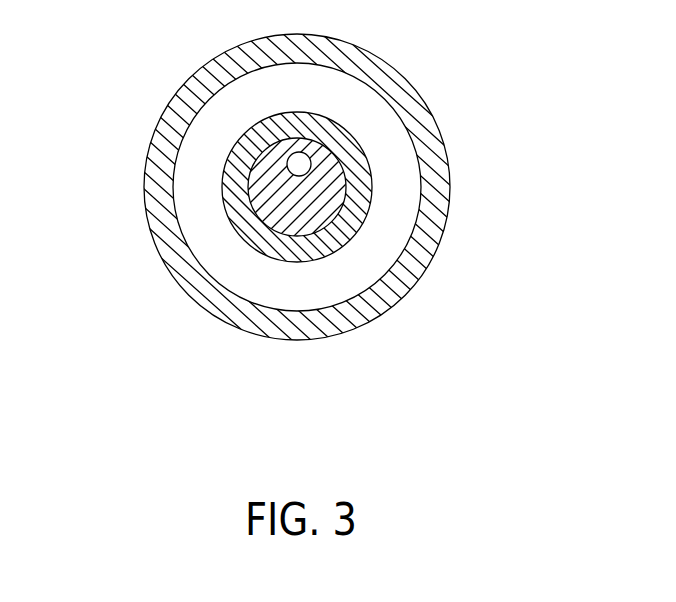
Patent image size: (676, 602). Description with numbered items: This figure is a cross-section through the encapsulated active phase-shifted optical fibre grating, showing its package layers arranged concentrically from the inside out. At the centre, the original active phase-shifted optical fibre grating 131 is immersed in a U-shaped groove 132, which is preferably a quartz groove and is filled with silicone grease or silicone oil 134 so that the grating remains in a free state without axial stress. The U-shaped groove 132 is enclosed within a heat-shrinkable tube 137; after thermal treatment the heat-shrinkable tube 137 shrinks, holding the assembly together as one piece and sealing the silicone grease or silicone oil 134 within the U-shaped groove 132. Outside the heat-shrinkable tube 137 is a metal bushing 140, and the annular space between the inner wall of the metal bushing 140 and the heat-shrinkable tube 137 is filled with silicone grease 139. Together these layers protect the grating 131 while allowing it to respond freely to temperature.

The original active phase-shifted optical fibre grating 131 is at (305, 160).
The U-shaped groove 132 is at (320, 193).
The silicone grease or silicone oil 134 is at (278, 149).
The heat-shrinkable tube 137 is at (355, 173).
The silicone grease 139 is at (203, 242).
The metal bushing 140 is at (148, 183).